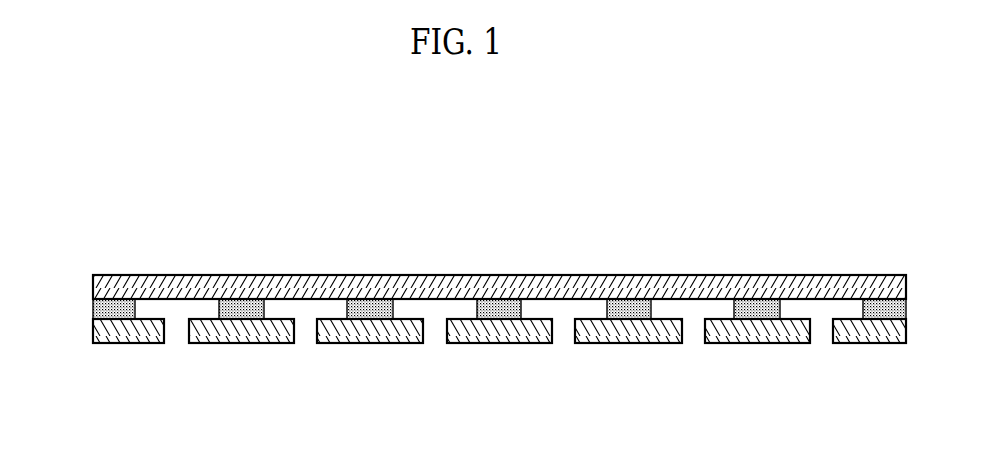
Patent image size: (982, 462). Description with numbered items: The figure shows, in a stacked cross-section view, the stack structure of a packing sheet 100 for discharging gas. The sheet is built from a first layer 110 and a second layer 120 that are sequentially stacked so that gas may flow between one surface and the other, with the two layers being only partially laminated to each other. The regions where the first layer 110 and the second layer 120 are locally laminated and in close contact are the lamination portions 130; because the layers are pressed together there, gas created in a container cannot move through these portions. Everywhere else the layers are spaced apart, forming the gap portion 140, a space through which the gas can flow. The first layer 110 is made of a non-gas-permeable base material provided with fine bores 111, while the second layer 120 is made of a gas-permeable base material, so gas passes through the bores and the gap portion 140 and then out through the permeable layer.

The packing sheet for discharging gas 100 is at (154, 133).
The first layer 110 is at (630, 333).
The fine bores 111 is at (177, 330).
The second layer 120 is at (435, 283).
The lamination portions 130 is at (97, 308).
The gap portion 140 is at (717, 308).